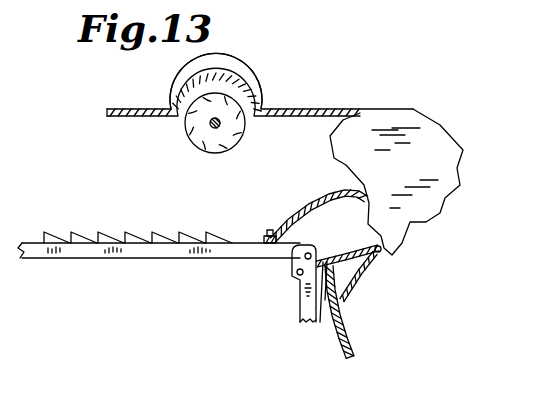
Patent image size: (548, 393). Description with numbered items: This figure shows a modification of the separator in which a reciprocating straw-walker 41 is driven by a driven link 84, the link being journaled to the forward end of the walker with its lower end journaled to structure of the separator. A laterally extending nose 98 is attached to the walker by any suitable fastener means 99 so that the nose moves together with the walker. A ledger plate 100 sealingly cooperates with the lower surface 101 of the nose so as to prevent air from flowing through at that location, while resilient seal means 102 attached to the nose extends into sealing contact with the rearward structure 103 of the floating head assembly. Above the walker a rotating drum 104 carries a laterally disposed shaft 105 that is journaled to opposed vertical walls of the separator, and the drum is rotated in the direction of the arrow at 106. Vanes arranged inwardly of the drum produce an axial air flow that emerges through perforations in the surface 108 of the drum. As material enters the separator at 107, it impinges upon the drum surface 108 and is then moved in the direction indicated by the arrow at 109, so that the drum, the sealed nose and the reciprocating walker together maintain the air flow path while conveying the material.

The straw-walker 41 is at (133, 264).
The driven link 84 is at (299, 305).
The nose 98 is at (300, 204).
The fastener means 99 is at (276, 223).
The ledger plate 100 is at (321, 316).
The lower surface of the nose 101 is at (333, 258).
The resilient seal means 102 is at (357, 273).
The rearward structure of the floating head assembly 103 is at (346, 333).
The rotating drum 104 is at (234, 94).
The shaft 105 is at (220, 121).
The direction arrow of drum rotation 106 is at (179, 91).
The material entry point 107 is at (258, 139).
The drum surface 108 is at (185, 129).
The direction arrow of material movement 109 is at (173, 142).